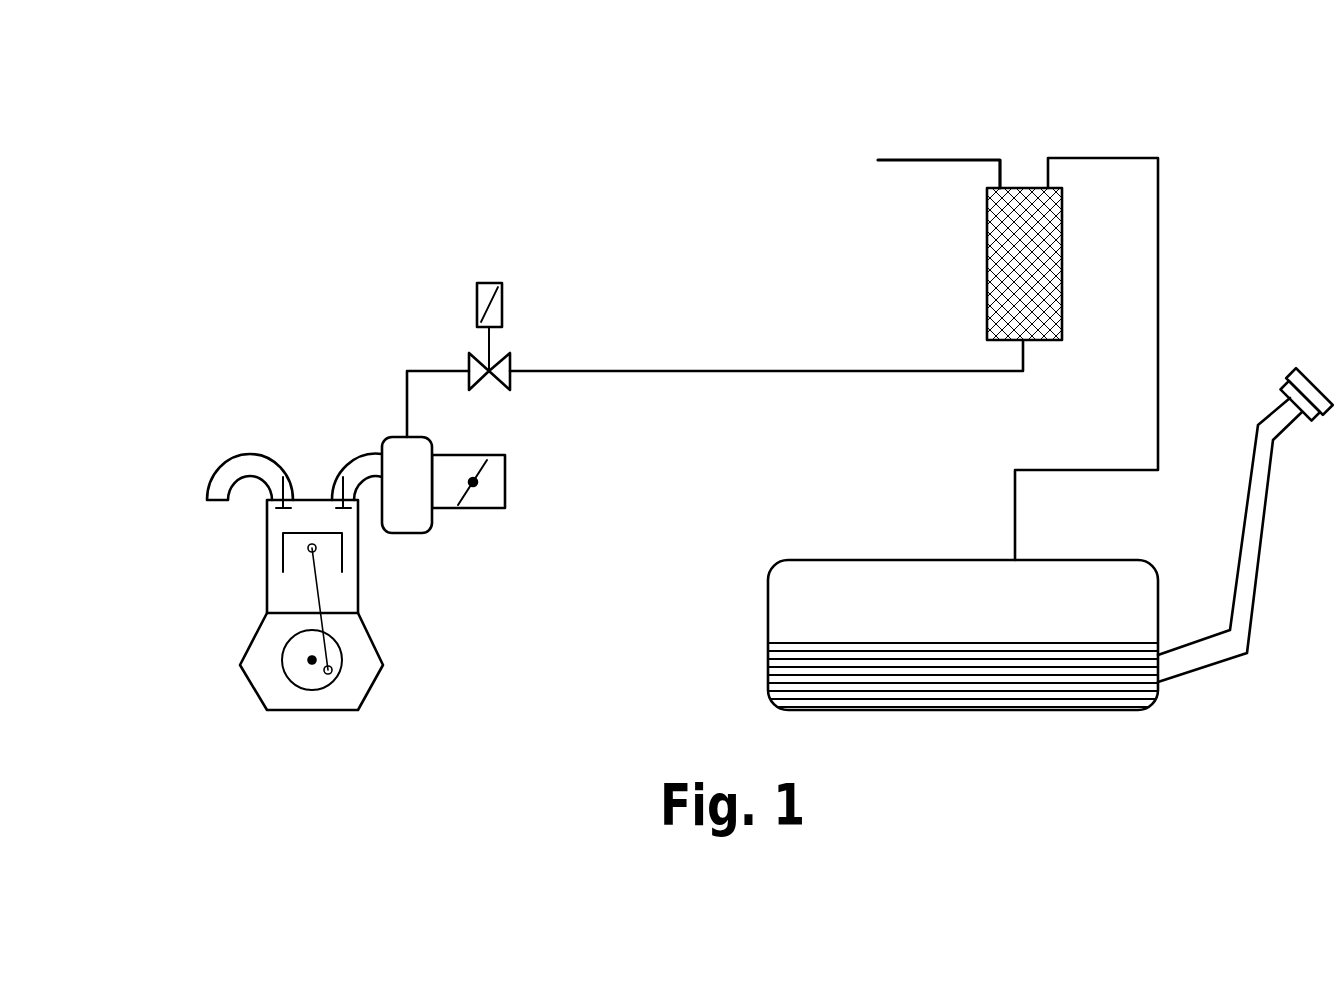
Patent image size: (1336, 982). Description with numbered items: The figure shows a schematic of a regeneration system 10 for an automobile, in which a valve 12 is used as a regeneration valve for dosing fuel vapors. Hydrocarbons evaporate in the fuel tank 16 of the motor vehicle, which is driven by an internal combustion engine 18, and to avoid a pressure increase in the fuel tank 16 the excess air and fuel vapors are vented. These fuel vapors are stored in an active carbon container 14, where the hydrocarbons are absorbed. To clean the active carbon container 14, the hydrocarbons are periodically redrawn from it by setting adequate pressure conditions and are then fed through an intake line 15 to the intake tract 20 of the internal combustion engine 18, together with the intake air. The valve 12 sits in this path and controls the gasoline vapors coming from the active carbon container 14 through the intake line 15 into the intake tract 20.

The regeneration system 10 is at (1210, 135).
The valve 12 is at (477, 288).
The active carbon container 14 is at (987, 222).
The intake line 15 is at (677, 367).
The fuel tank 16 is at (763, 612).
The internal combustion engine 18 is at (345, 697).
The intake tract 20 is at (398, 447).